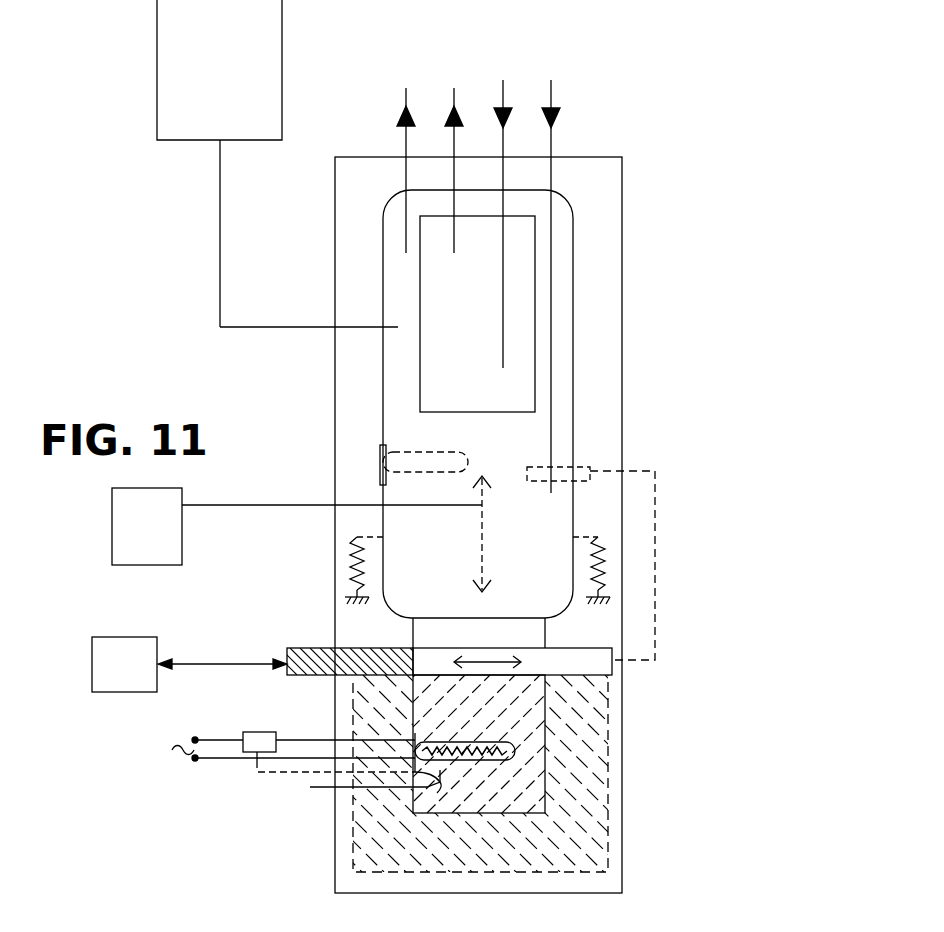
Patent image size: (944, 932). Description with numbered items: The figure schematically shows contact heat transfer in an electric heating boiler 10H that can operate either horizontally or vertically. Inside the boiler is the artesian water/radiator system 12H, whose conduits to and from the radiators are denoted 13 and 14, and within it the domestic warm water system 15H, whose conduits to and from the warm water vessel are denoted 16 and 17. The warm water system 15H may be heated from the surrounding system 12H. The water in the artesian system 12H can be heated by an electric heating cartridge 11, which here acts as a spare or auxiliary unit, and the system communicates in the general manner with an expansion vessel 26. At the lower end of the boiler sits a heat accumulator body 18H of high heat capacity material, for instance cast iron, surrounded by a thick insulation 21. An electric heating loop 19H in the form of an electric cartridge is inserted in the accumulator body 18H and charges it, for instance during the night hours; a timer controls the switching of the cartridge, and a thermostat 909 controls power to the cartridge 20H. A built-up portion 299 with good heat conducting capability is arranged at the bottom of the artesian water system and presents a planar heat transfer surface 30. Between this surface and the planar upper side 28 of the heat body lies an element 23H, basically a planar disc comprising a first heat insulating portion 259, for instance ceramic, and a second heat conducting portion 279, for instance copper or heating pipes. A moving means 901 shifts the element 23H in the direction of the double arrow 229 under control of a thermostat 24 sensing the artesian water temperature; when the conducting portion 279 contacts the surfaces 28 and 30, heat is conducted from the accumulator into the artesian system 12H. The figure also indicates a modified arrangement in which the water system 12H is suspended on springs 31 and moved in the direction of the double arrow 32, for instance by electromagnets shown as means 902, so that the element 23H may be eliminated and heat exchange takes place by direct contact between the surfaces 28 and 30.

The heating boiler 10H is at (624, 313).
The artesian water/radiator system 12H is at (382, 358).
The domestic warm water system 15H is at (536, 262).
The conduit to the radiators 13 is at (406, 146).
The conduit from the warm water vessel 17 is at (454, 146).
The conduit to the warm water vessel 16 is at (503, 146).
The conduit from the radiators 14 is at (551, 146).
The expansion vessel 26 is at (192, 86).
The electric heating cartridge 11 is at (428, 450).
The double arrow 32 is at (480, 525).
The thermostat 24 is at (582, 466).
The springs 31 is at (346, 560).
The means 902 is at (111, 511).
The moving means 901 is at (125, 637).
The second heat conducting portion 279 is at (316, 655).
The planar heat transfer surface 30 is at (433, 641).
The element 23H is at (573, 644).
The first heat insulating portion 259 is at (588, 657).
The built-up portion 299 is at (508, 630).
The double arrow 229 is at (497, 665).
The insulation 21 is at (575, 823).
The heat accumulator body 18H is at (457, 807).
The planar upper side 28 is at (413, 700).
The thermostat 909 is at (235, 825).
The cartridge 20H is at (256, 766).
The electric heating loop 19H is at (310, 787).